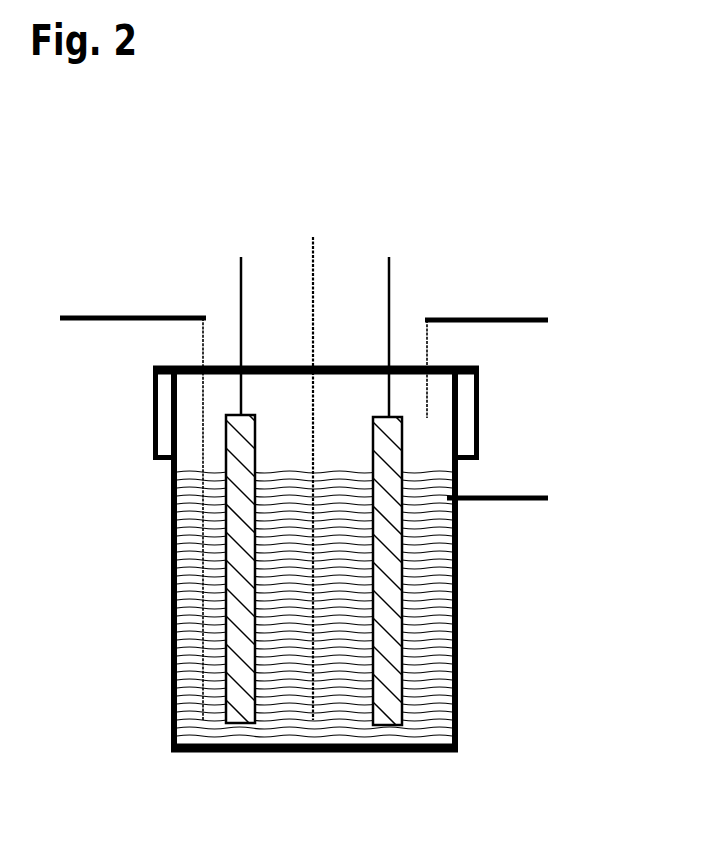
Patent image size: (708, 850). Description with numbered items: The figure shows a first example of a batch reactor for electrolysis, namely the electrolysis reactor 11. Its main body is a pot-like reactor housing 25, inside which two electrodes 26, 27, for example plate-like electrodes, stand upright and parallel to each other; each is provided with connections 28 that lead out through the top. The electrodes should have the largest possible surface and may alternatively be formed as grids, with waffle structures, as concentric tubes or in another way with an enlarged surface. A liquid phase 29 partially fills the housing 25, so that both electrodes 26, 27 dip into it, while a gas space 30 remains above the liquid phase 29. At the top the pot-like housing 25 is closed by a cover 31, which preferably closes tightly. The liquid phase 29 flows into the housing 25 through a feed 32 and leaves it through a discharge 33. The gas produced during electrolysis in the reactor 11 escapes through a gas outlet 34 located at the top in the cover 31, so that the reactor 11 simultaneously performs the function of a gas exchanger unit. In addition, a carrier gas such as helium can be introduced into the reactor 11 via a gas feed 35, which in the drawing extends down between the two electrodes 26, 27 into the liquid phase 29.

The electrolysis reactor 11 is at (150, 197).
The reactor housing 25 is at (172, 590).
The first electrode 26 is at (230, 488).
The second electrode 27 is at (392, 537).
The connections 28 is at (240, 272).
The liquid phase 29 is at (427, 690).
The gas space 30 is at (286, 422).
The cover 31 is at (482, 395).
The feed 32 is at (100, 316).
The discharge 33 is at (528, 495).
The gas outlet 34 is at (513, 318).
The gas feed 35 is at (313, 242).